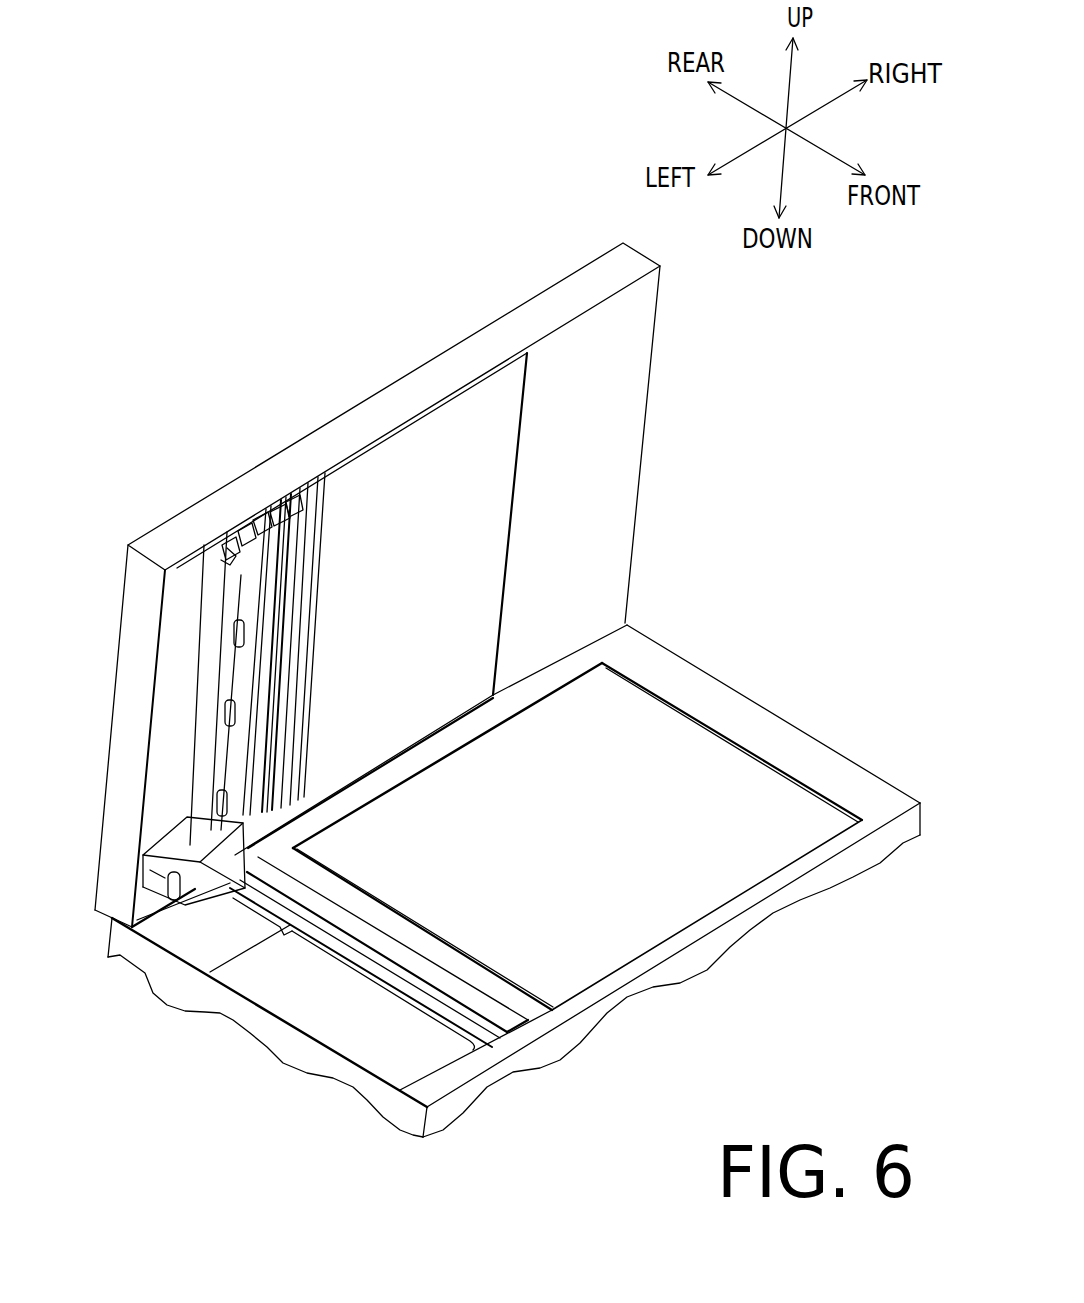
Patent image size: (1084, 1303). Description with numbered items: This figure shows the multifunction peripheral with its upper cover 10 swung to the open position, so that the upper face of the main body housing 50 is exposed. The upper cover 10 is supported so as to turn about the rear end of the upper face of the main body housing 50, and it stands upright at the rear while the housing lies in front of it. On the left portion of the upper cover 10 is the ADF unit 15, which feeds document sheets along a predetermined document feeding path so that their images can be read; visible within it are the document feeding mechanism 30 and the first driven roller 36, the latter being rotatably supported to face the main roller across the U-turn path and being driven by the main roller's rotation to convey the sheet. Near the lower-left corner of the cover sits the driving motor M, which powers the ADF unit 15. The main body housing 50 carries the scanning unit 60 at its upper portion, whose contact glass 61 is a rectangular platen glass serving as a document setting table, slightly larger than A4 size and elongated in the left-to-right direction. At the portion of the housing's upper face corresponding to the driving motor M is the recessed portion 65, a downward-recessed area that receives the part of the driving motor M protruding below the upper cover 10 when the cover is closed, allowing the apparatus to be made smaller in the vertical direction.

The upper cover 10 is at (618, 438).
The ADF unit 15 is at (297, 574).
The document feeding mechanism 30 is at (250, 523).
The first driven roller 36 is at (233, 640).
The driving motor M is at (142, 900).
The main body housing 50 is at (860, 780).
The scanning unit 60 is at (740, 776).
The contact glass 61 is at (733, 885).
The recessed portion 65 is at (207, 951).